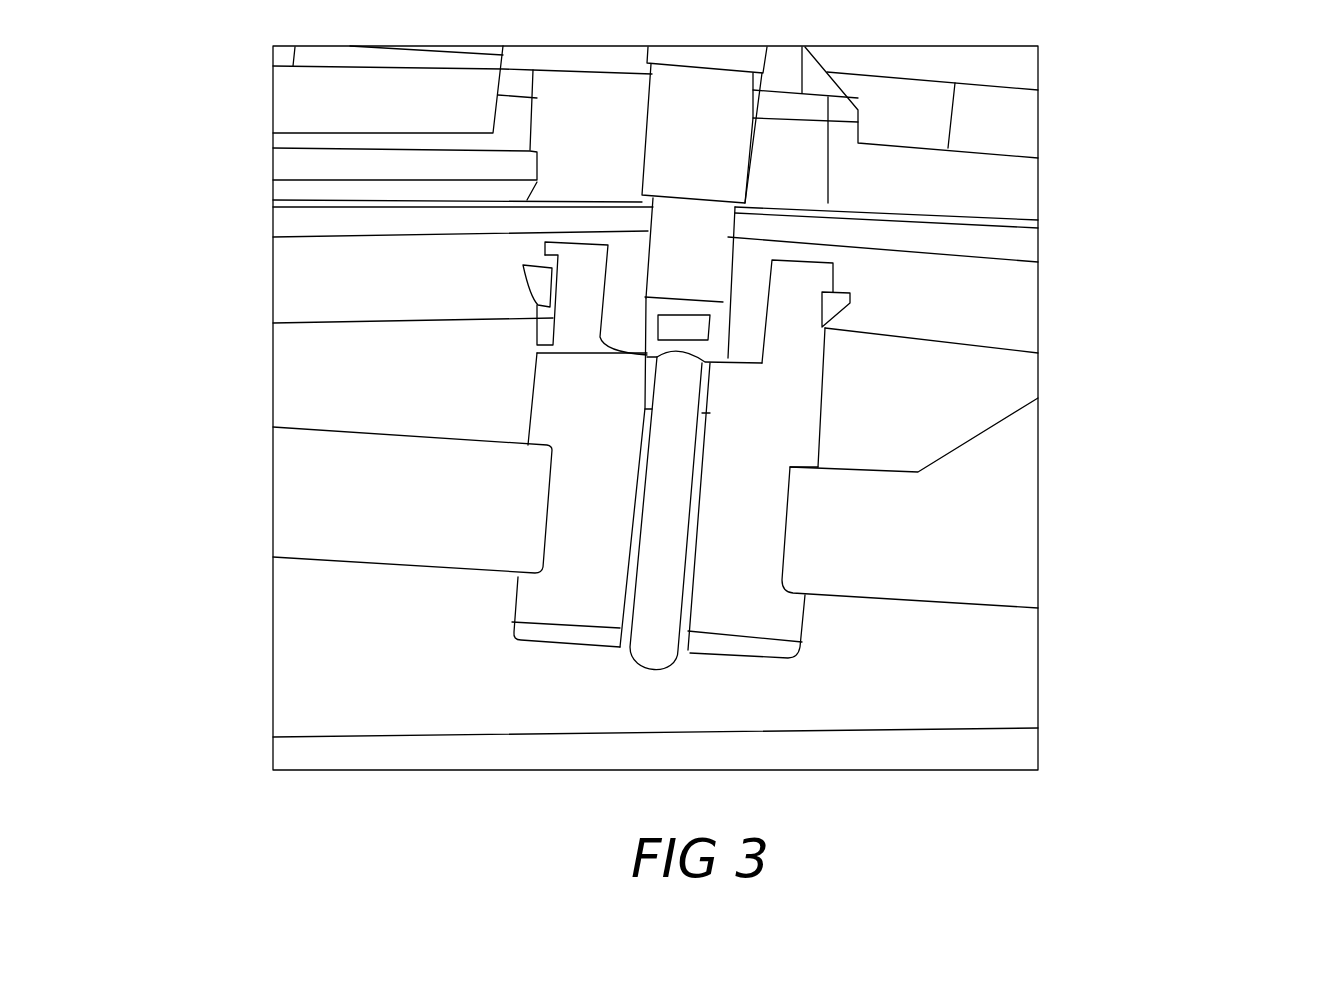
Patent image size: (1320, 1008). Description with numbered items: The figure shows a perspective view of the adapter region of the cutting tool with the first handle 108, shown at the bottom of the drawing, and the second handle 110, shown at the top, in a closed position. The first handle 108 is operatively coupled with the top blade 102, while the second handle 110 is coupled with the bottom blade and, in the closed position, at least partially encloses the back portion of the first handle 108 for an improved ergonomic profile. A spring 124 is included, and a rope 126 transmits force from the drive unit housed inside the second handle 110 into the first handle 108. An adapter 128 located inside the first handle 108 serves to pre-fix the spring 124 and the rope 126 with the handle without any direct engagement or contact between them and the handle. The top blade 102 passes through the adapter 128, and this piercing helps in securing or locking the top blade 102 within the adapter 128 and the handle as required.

The top blade 102 is at (398, 507).
The first handle 108 is at (314, 640).
The second handle 110 is at (993, 197).
The spring 124 is at (732, 175).
The rope 126 is at (670, 512).
The adapter 128 is at (856, 375).